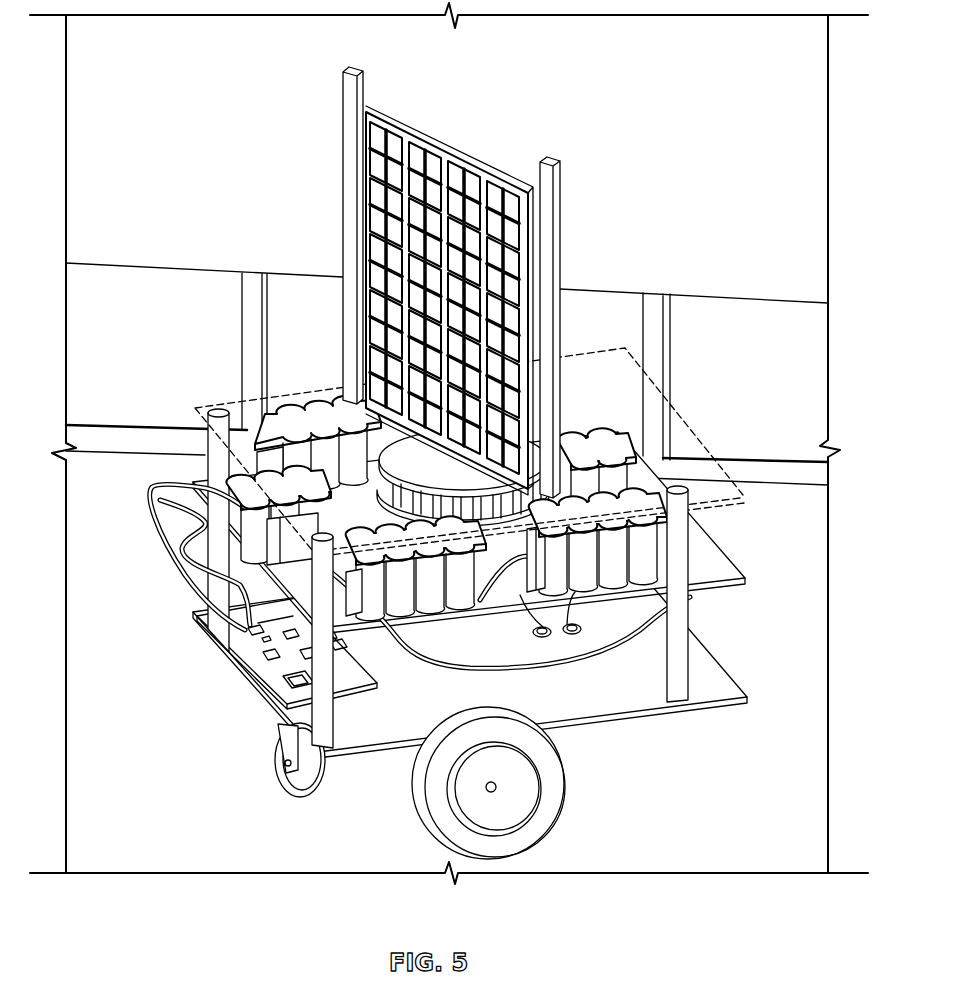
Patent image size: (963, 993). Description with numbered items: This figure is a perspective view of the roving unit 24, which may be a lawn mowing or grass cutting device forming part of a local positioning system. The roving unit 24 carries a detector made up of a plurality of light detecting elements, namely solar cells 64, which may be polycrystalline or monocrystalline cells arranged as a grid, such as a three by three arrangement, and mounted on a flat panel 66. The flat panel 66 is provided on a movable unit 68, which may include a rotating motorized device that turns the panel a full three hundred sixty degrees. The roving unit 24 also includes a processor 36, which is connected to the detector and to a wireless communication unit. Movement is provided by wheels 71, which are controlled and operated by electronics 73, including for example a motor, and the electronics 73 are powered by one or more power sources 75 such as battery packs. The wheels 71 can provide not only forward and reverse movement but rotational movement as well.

The roving unit 24 is at (228, 91).
The solar cells 64 is at (393, 217).
The flat panel 66 is at (557, 251).
The movable unit 68 is at (402, 458).
The power sources 75 is at (270, 457).
The electronics 73 is at (243, 642).
The processor 36 is at (288, 687).
The wheels 71 is at (300, 789).